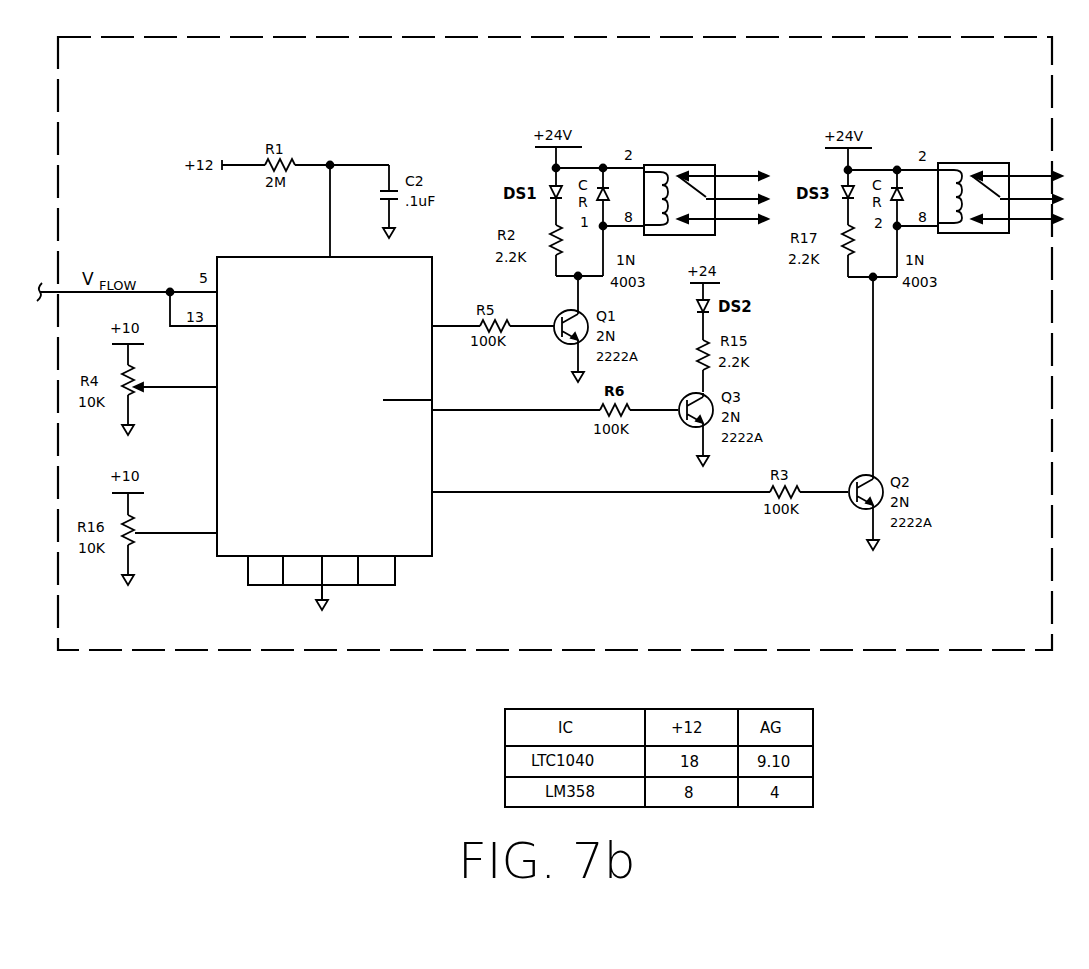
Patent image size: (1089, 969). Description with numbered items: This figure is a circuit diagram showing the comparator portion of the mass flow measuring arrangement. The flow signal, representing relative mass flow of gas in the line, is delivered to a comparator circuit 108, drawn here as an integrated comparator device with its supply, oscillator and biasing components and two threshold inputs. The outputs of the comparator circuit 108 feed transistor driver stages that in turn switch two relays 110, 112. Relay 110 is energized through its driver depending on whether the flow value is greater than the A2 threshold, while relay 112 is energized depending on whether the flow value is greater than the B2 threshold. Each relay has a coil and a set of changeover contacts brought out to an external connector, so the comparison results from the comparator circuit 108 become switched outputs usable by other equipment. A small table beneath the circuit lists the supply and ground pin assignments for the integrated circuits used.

The comparator circuit 108 is at (432, 544).
The relay 110 is at (715, 236).
The relay 112 is at (960, 233).